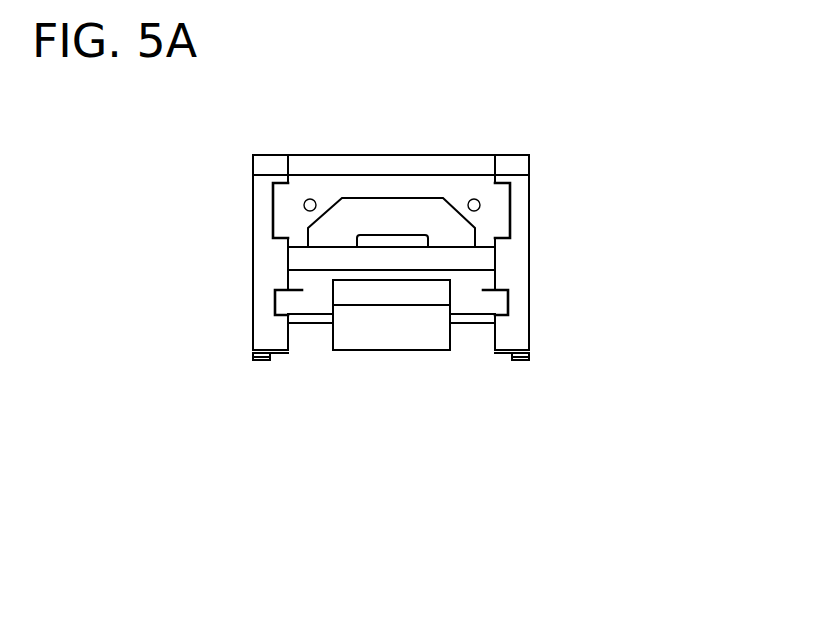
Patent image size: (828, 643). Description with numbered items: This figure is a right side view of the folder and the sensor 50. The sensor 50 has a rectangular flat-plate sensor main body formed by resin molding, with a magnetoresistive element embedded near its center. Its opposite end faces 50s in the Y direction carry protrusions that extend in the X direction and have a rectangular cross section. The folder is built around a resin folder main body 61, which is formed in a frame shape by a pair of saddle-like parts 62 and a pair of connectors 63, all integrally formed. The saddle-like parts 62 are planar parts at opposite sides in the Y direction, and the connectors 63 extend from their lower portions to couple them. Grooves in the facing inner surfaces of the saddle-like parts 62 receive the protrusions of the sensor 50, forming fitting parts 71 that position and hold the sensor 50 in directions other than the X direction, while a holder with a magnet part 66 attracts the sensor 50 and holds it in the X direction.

The folder main body 61 is at (563, 165).
The connector 63 is at (423, 187).
The saddle-like part 62 is at (262, 253).
The end face 50s is at (287, 282).
The fitting part 71 is at (505, 298).
The magnet part 66 is at (352, 340).
The sensor 50 is at (467, 295).